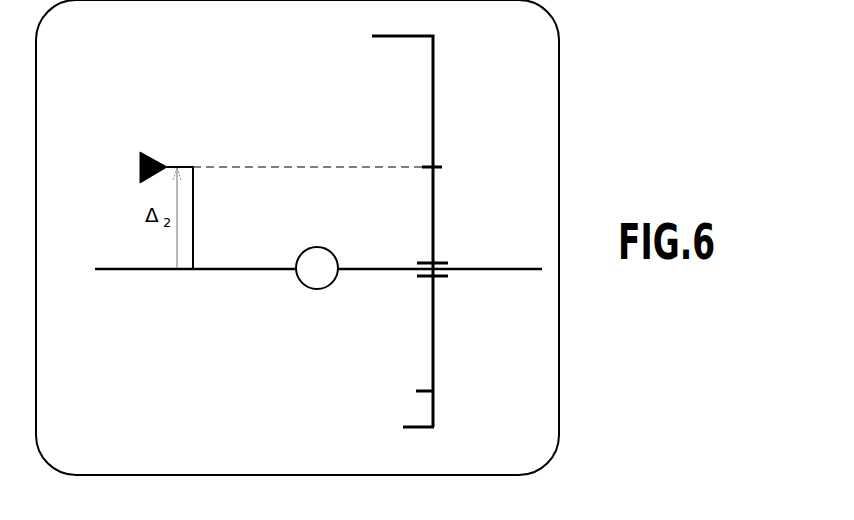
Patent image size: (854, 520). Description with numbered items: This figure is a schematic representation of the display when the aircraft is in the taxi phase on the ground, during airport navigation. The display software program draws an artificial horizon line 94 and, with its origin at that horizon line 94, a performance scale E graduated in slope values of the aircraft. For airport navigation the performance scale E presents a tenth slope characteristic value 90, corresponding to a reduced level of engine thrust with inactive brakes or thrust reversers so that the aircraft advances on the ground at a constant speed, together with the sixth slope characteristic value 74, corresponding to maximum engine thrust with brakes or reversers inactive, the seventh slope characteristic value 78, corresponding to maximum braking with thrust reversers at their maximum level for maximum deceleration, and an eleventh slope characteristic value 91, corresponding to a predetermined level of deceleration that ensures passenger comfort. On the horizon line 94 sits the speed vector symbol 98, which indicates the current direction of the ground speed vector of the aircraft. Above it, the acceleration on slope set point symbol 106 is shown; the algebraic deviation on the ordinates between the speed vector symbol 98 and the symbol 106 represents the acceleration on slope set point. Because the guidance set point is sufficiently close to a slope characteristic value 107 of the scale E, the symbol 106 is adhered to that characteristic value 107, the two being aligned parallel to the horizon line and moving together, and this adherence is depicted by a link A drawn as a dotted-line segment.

The sixth slope characteristic value 74 is at (398, 38).
The seventh slope characteristic value 78 is at (418, 428).
The tenth slope characteristic value 90 is at (447, 262).
The eleventh slope characteristic value 91 is at (433, 390).
The artificial horizon line 94 is at (108, 268).
The speed vector symbol 98 is at (317, 247).
The acceleration on slope set point symbol 106 is at (147, 151).
The slope characteristic value 107 is at (437, 166).
The link A is at (297, 165).
The performance scale E is at (487, 162).